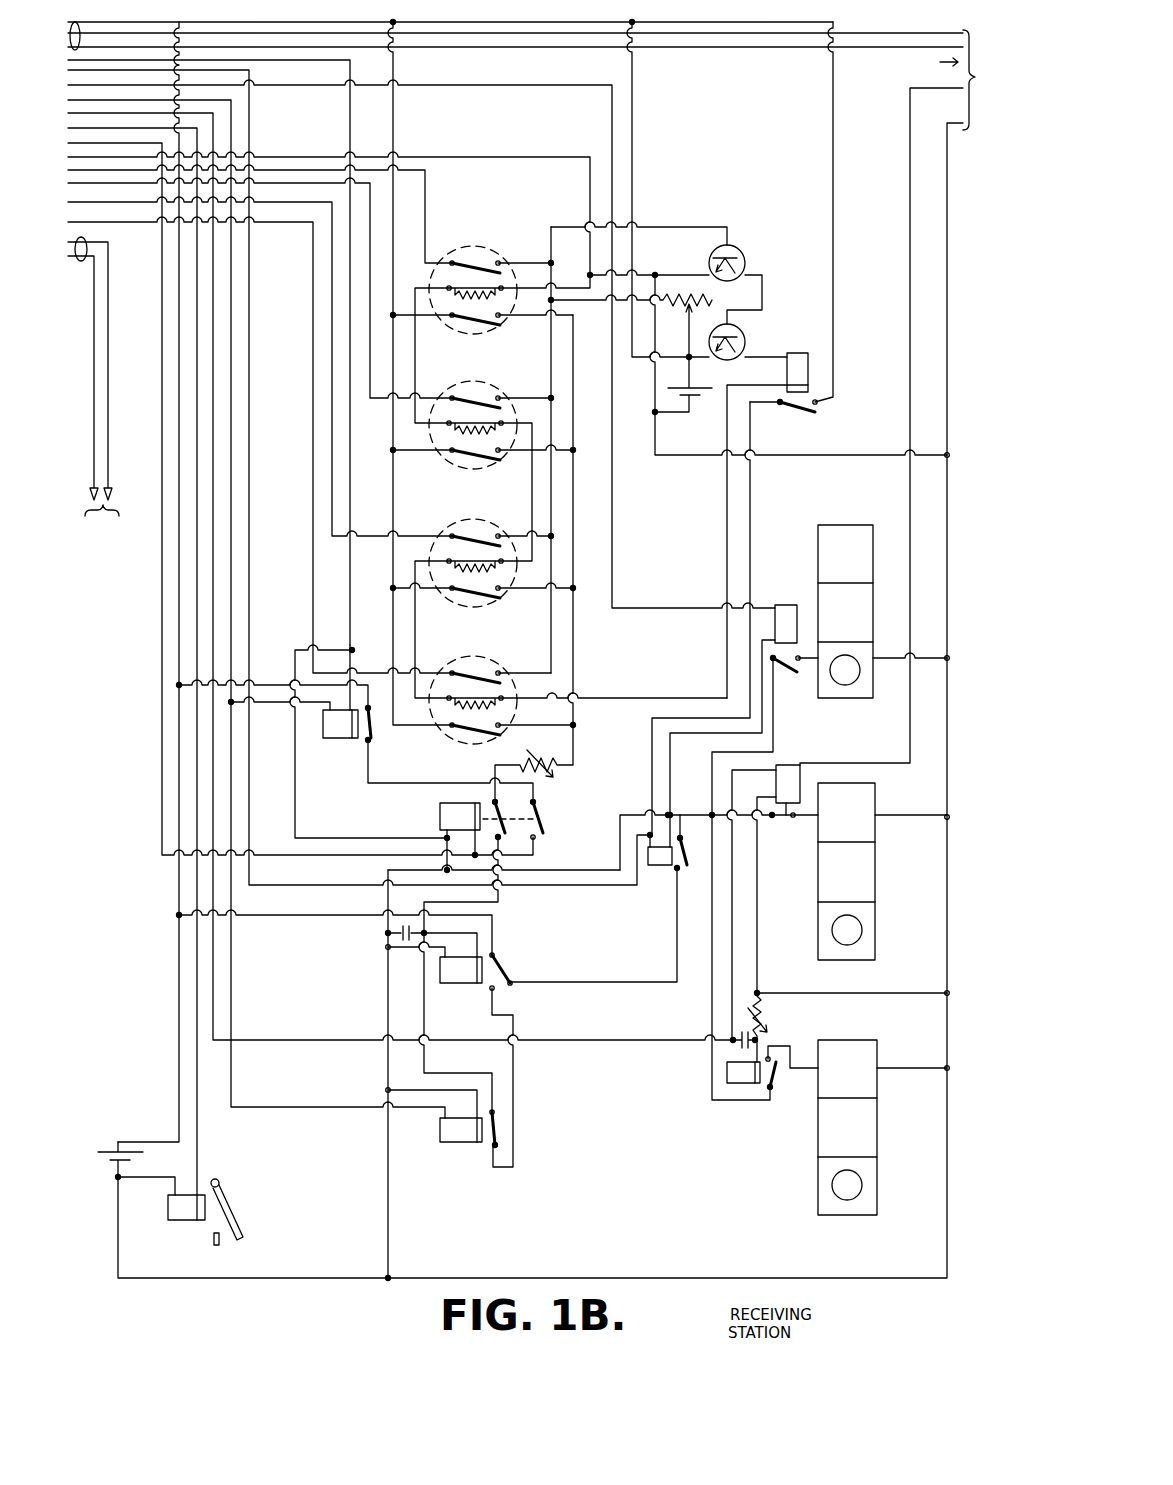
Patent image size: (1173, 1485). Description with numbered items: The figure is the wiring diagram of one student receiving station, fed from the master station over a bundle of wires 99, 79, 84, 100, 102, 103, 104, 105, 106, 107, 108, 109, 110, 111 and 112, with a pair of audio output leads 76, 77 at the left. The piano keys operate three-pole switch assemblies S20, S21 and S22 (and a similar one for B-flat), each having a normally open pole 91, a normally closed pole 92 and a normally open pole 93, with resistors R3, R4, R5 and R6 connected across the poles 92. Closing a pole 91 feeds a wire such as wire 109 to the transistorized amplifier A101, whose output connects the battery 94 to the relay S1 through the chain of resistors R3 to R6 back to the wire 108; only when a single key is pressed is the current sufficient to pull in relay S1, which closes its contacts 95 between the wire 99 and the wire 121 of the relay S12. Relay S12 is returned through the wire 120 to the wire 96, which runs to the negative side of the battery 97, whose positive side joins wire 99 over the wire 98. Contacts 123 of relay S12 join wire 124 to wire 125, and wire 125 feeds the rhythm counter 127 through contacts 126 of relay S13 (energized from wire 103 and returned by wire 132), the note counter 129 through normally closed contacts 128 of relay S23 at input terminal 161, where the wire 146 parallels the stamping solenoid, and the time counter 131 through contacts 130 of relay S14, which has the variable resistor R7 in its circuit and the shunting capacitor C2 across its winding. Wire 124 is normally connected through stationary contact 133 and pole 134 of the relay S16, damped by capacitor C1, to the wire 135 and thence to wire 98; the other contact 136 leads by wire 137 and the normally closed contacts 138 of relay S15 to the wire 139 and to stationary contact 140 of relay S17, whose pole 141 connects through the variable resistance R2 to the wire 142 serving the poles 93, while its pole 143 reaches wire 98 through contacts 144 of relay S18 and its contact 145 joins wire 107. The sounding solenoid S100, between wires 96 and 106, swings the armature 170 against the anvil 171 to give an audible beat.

The wire 99 is at (80, 22).
The conductor 79 is at (112, 34).
The print out conductor 84 is at (800, 48).
The wire 100 is at (284, 63).
The conductor 102 is at (74, 72).
The wire 103 is at (78, 86).
The wire 104 is at (82, 101).
The wire 105 is at (80, 114).
The wire 106 is at (80, 129).
The wire 107 is at (80, 144).
The wire 108 is at (568, 158).
The wire 109 is at (80, 171).
The conductor 110 is at (82, 184).
The conductor 111 is at (80, 203).
The wire 112 is at (114, 228).
The audio output lead 76 is at (112, 286).
The audio output lead 77 is at (92, 318).
The wire 98 is at (176, 1022).
The battery 97 is at (107, 1158).
The wire 96 is at (312, 1280).
The sounding solenoid S100 is at (183, 1222).
The sounding armature 170 is at (242, 1220).
The anvil 171 is at (212, 1250).
The wire 120 is at (392, 1200).
The relay S18 is at (338, 740).
The normally closed contacts 144 is at (374, 740).
The relay S17 is at (440, 812).
The pole 141 is at (500, 818).
The pole 143 is at (540, 823).
The stationary contact 140 is at (500, 840).
The stationary contact 145 is at (536, 840).
The variable resistance R2 is at (534, 763).
The wire 142 is at (578, 657).
The pole 91 is at (482, 260).
The pole 92 is at (448, 283).
The pole 93 is at (465, 322).
The resistor R3 is at (500, 298).
The resistor R4 is at (500, 433).
The resistor R5 is at (500, 571).
The resistor R6 is at (500, 708).
The key-operated switch assembly S20 is at (500, 352).
The key-operated switch assembly S21 is at (490, 500).
The key-operated switch assembly S22 is at (500, 635).
The transistorized amplifier A101 is at (762, 265).
The battery 94 is at (694, 402).
The relay S1 is at (802, 352).
The normally open contacts 95 is at (825, 410).
The wire 146 is at (906, 320).
The relay S13 is at (781, 605).
The normally open contacts 126 is at (799, 676).
The digital counter 127 is at (833, 524).
The wire 121 is at (752, 548).
The wire 125 is at (692, 814).
The wire 132 is at (672, 768).
The relay S23 is at (790, 764).
The input terminal 161 is at (805, 822).
The normally closed contacts 128 is at (782, 820).
The digital counter 129 is at (877, 877).
The relay S12 is at (662, 866).
The normally open contacts 123 is at (684, 876).
The wire 124 is at (590, 988).
The shunting capacitor C1 is at (396, 933).
The single pole two-position relay S16 is at (452, 985).
The wire 135 is at (272, 932).
The pole 134 is at (503, 952).
The stationary contact 133 is at (516, 978).
The stationary contact 136 is at (497, 992).
The wire 139 is at (424, 1008).
The wire 137 is at (517, 1113).
The relay S15 is at (442, 1143).
The normally closed contacts 138 is at (488, 1130).
The shunting capacitor C2 is at (740, 1028).
The variable resistor R7 is at (756, 1011).
The relay S14 is at (737, 1085).
The normally open contacts 130 is at (786, 1081).
The digital counter 131 is at (845, 1040).